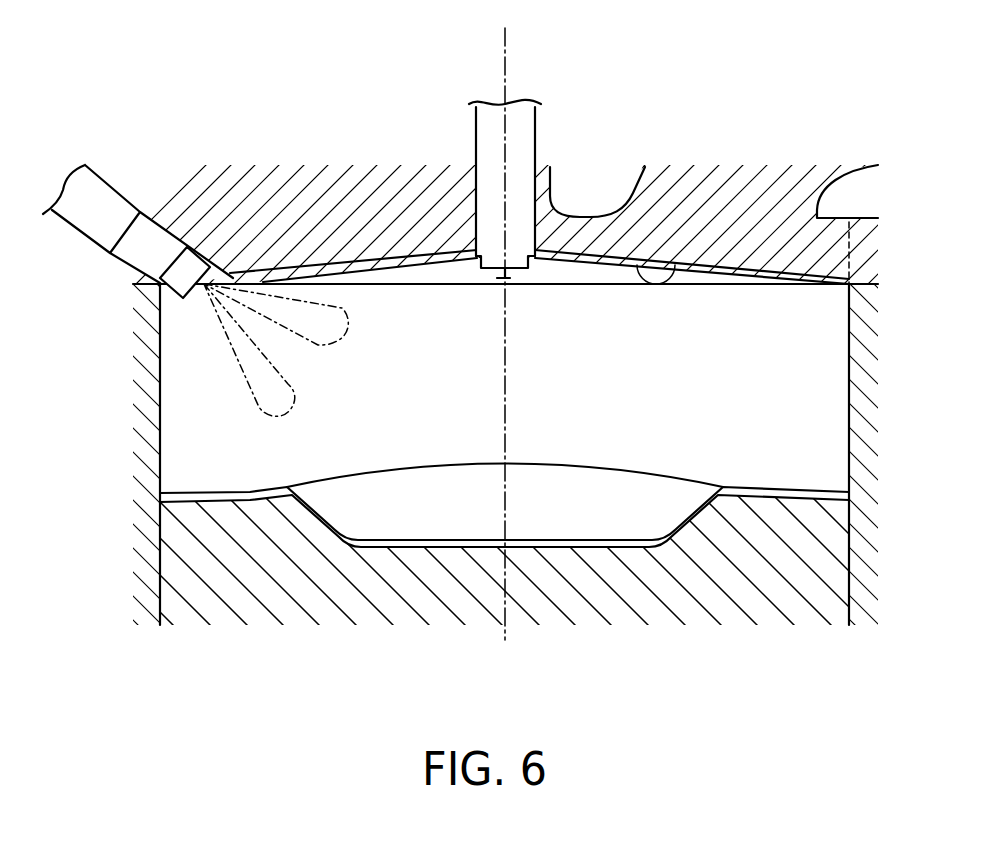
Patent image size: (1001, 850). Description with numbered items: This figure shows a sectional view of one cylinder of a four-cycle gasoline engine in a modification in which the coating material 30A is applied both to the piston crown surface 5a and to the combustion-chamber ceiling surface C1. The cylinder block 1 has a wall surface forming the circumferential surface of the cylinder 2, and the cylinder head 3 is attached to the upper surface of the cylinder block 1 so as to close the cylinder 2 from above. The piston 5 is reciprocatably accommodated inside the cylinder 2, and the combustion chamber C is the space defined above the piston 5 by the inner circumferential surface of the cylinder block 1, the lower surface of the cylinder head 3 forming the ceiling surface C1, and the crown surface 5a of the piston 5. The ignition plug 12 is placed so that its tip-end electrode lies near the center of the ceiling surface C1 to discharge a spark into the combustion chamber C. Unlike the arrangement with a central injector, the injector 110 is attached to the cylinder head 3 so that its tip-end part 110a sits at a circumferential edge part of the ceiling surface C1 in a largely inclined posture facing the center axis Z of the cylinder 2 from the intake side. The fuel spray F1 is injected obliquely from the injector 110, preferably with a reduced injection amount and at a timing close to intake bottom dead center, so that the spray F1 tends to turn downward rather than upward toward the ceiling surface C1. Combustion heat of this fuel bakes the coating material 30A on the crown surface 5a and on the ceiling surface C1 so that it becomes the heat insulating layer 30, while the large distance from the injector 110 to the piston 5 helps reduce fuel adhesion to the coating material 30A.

The cylinder block 1 is at (148, 440).
The cylinder 2 is at (850, 342).
The cylinder head 3 is at (832, 240).
The piston 5 is at (180, 547).
The crown surface 5a is at (825, 493).
The ignition plug 12 is at (488, 193).
The heat insulating layer 30 is at (504, 399).
The coating material 30A is at (595, 260).
The injector 110 is at (115, 190).
The tip-end part 110a is at (178, 290).
The fuel spray F1 is at (348, 320).
The combustion chamber C is at (203, 362).
The ceiling surface C1 is at (677, 262).
The center axis Z is at (505, 48).